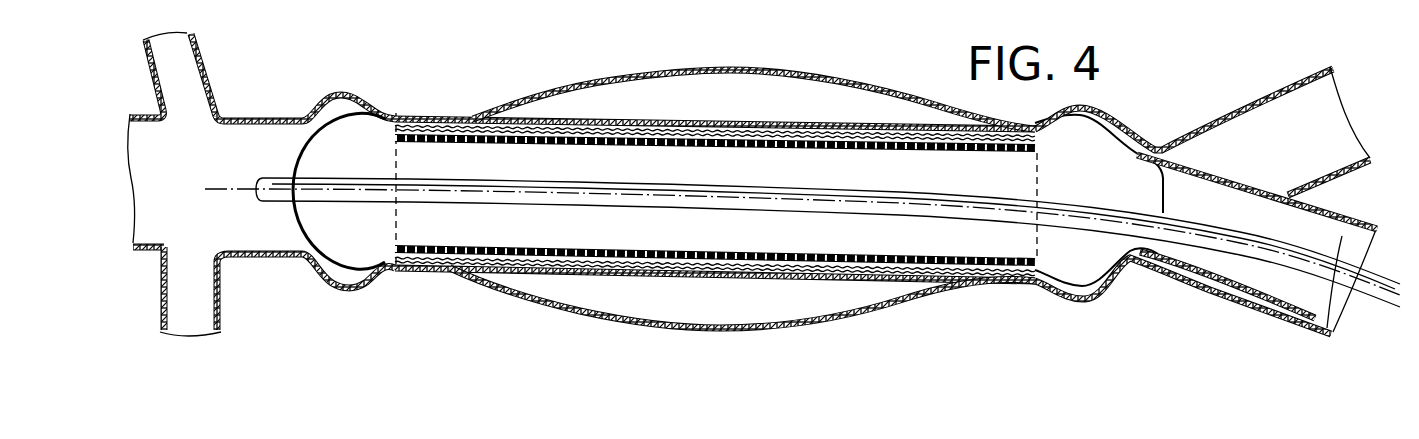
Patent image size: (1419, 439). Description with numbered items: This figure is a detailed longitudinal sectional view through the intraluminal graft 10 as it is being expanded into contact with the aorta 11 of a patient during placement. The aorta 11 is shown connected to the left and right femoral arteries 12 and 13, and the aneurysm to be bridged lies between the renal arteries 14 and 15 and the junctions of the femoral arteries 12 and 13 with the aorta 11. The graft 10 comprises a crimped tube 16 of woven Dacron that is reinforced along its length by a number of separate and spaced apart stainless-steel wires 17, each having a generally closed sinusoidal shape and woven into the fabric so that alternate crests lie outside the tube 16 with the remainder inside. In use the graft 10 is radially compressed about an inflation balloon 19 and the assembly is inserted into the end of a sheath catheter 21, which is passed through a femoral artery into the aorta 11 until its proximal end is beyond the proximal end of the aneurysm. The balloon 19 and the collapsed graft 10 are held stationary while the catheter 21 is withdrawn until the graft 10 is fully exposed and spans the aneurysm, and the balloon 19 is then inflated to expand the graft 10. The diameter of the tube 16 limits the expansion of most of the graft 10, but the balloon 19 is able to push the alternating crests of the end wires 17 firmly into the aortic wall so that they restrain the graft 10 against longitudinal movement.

The intraluminal graft 10 is at (712, 273).
The aorta 11 is at (752, 72).
The left femoral artery 12 is at (1270, 95).
The right femoral artery 13 is at (1267, 293).
The renal artery 14 is at (208, 78).
The renal artery 15 is at (222, 322).
The crimped tube 16 is at (617, 127).
The stainless-steel wires 17 is at (853, 276).
The inflation balloon 19 is at (308, 225).
The sheath catheter 21 is at (1203, 282).